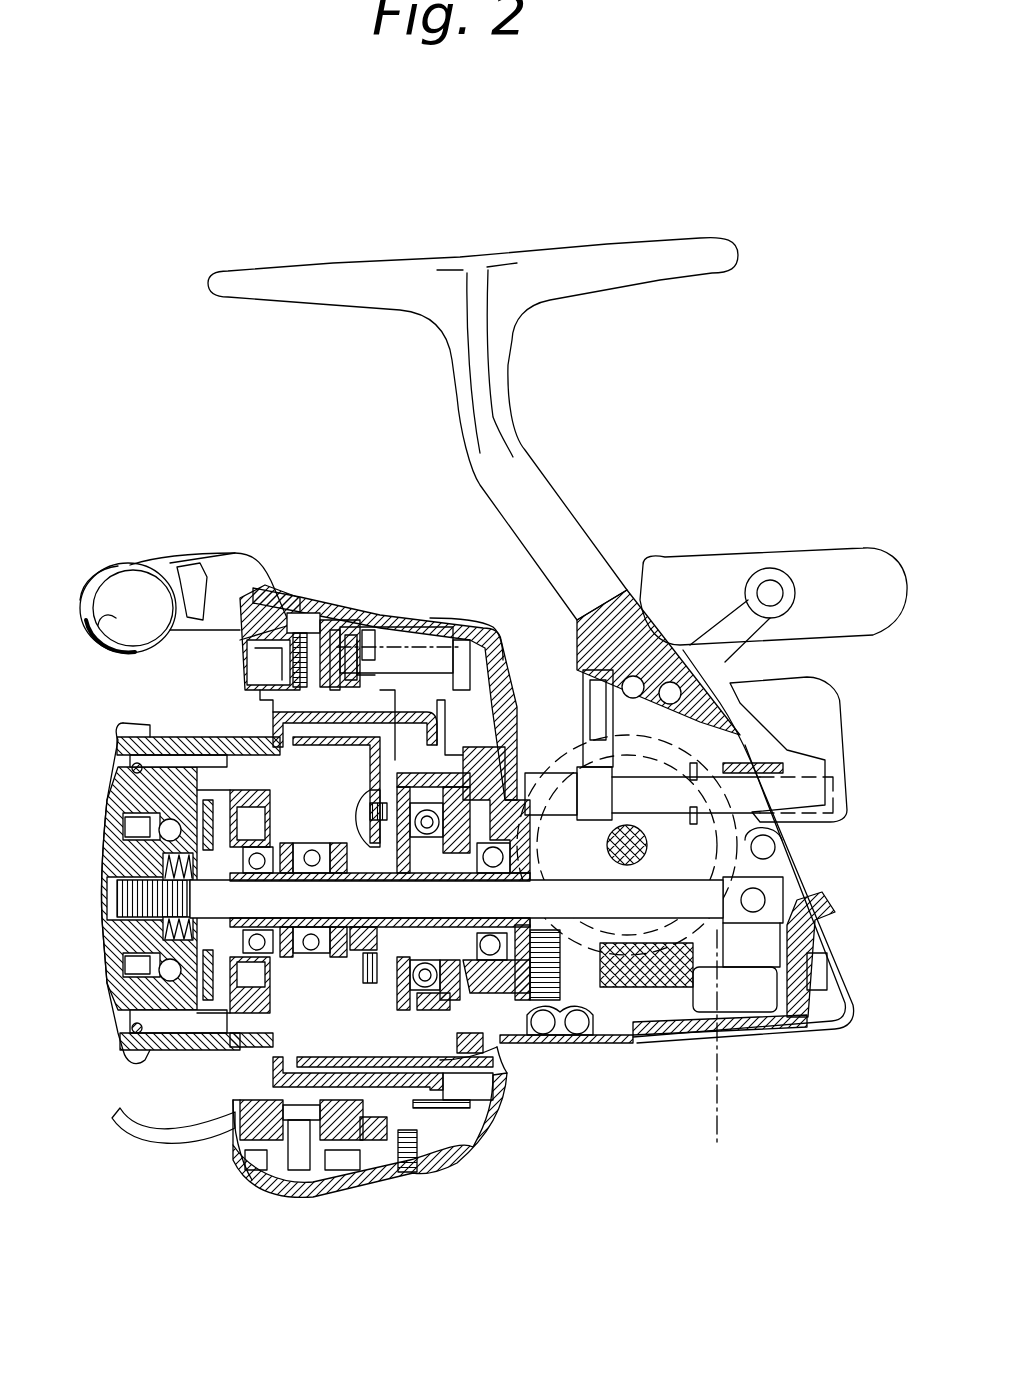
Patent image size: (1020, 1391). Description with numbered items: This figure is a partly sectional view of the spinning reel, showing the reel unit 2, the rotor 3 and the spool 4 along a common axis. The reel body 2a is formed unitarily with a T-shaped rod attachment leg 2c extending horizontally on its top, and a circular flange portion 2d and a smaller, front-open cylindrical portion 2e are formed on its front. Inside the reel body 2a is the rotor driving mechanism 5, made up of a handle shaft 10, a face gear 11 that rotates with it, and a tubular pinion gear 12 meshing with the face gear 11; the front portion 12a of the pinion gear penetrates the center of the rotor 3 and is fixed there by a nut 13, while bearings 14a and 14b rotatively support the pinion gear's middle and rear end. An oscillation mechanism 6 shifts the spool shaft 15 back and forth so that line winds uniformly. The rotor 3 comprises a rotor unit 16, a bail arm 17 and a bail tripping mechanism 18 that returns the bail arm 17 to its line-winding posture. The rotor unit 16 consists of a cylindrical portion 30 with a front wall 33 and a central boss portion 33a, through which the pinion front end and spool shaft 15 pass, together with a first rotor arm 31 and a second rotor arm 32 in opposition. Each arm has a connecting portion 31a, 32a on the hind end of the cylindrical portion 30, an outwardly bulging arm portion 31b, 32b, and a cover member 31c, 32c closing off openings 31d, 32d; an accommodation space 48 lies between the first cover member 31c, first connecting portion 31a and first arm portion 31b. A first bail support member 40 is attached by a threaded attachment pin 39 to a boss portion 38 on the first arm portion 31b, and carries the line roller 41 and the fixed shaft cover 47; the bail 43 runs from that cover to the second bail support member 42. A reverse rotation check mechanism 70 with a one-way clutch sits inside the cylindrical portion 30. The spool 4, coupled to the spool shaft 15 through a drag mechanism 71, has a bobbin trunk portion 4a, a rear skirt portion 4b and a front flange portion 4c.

The reel unit 2 is at (830, 890).
The reel body 2a is at (812, 910).
The rod attachment leg 2c is at (680, 262).
The flange portion 2d is at (505, 1065).
The cylindrical portion 2e is at (493, 658).
The rotor 3 is at (497, 1095).
The spool 4 is at (178, 732).
The bobbin trunk portion 4a is at (200, 730).
The skirt portion 4b is at (278, 1200).
The flange portion 4c is at (145, 724).
The rotor driving mechanism 5 is at (665, 795).
The oscillation mechanism 6 is at (615, 1020).
The handle shaft 10 is at (627, 870).
The face gear 11 is at (723, 1052).
The pinion gear 12 is at (548, 1043).
The front portion of the pinion gear 12a is at (312, 955).
The nut 13 is at (348, 933).
The bearing 14a is at (530, 1060).
The bearing 14b is at (585, 1040).
The spool shaft 15 is at (213, 900).
The rotor unit 16 is at (395, 700).
The bail arm 17 is at (112, 665).
The bail tripping mechanism 18 is at (372, 650).
The cylindrical portion 30 is at (327, 740).
The first rotor arm 31 is at (265, 704).
The first connecting portion 31a is at (437, 640).
The first arm portion 31b is at (333, 625).
The first cover member 31c is at (462, 640).
The opening 31d is at (352, 635).
The second rotor arm 32 is at (388, 1133).
The second connecting portion 32a is at (445, 1160).
The second arm portion 32b is at (313, 1193).
The second cover member 32c is at (370, 1195).
The opening 32d is at (252, 1195).
The front wall 33 is at (375, 745).
The boss portion 33a is at (337, 847).
The boss portion 38 is at (250, 660).
The attachment pin 39 is at (300, 612).
The first bail support member 40 is at (195, 565).
The line roller 41 is at (82, 580).
The second bail support member 42 is at (260, 1118).
The bail 43 is at (197, 560).
The fixed shaft cover 47 is at (100, 632).
The accommodation space 48 is at (357, 650).
The reverse rotation check mechanism 70 is at (440, 1010).
The drag mechanism 71 is at (165, 1105).